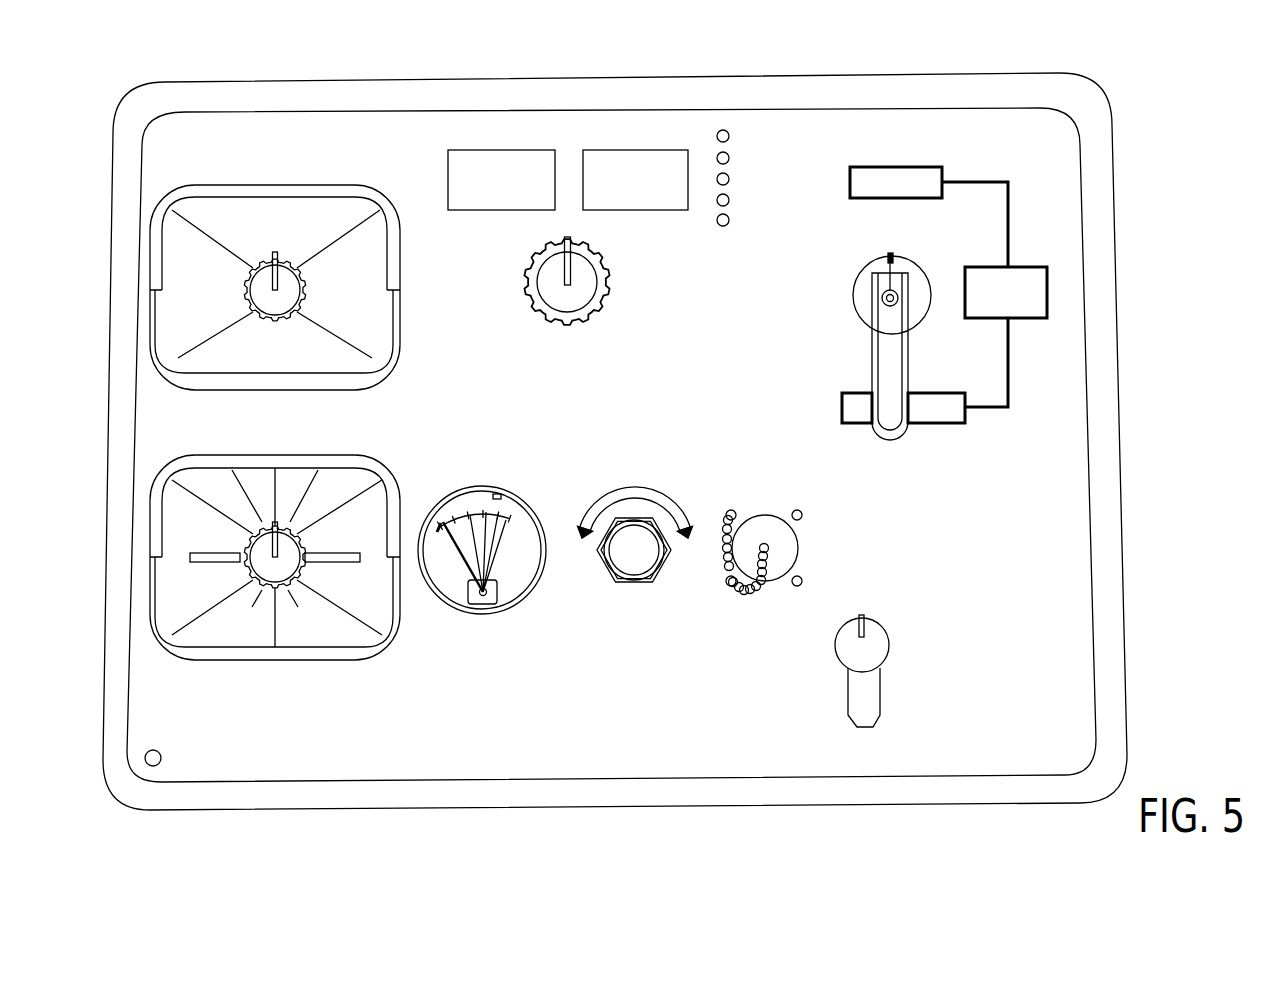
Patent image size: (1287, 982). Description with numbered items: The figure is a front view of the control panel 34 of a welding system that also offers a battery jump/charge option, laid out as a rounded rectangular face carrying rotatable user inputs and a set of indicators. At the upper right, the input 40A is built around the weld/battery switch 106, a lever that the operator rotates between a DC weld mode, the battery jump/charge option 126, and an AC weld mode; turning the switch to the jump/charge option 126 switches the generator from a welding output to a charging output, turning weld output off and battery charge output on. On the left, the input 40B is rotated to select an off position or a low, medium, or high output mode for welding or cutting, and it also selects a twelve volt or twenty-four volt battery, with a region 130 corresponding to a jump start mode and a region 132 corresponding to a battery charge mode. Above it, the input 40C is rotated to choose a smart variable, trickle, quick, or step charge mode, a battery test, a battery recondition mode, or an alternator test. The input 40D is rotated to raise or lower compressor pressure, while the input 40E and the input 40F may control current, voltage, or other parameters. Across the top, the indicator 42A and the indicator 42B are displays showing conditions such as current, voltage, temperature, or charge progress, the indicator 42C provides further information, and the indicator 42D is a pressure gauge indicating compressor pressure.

The control panel 34 is at (1116, 88).
The input 40A is at (893, 322).
The input 40B is at (282, 556).
The input 40C is at (272, 303).
The input 40D is at (667, 563).
The input 40E is at (888, 648).
The input 40F is at (600, 305).
The indicator 42A is at (503, 150).
The indicator 42B is at (634, 150).
The indicator 42C is at (725, 228).
The indicator 42D is at (515, 487).
The weld/battery switch 106 is at (890, 441).
The battery jump/charge option 126 is at (1047, 305).
The region 130 is at (378, 500).
The region 132 is at (173, 613).